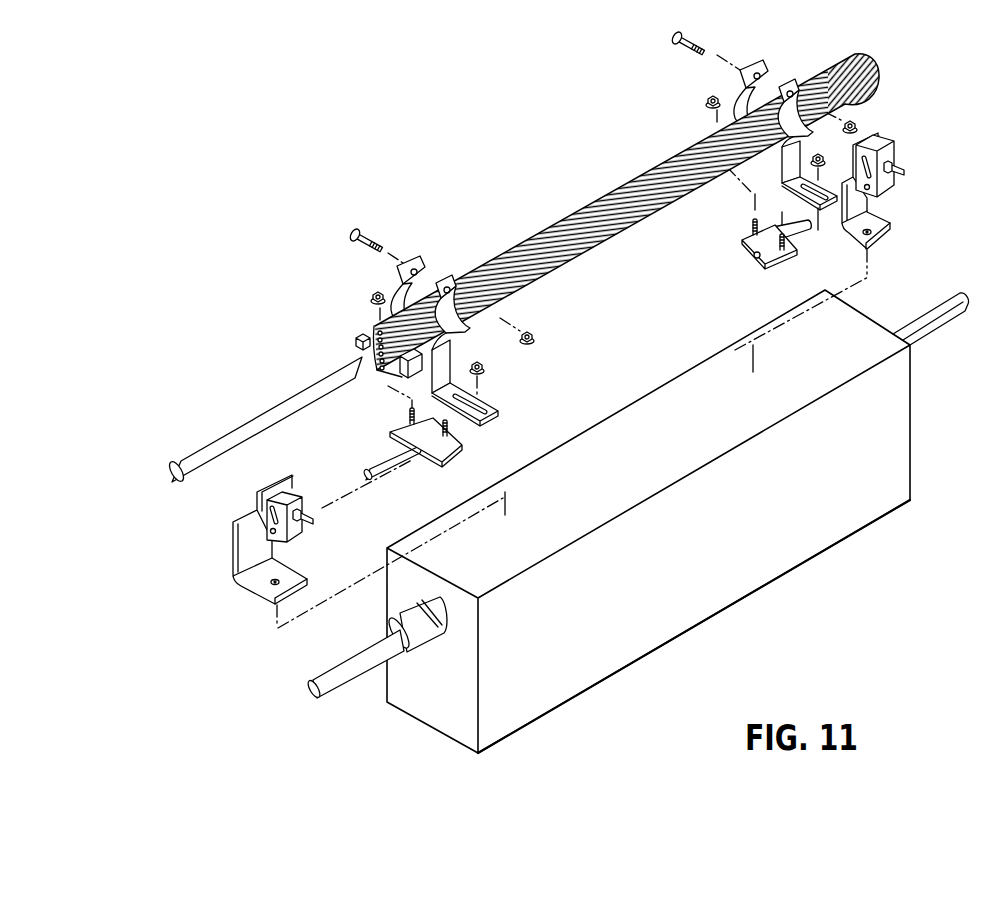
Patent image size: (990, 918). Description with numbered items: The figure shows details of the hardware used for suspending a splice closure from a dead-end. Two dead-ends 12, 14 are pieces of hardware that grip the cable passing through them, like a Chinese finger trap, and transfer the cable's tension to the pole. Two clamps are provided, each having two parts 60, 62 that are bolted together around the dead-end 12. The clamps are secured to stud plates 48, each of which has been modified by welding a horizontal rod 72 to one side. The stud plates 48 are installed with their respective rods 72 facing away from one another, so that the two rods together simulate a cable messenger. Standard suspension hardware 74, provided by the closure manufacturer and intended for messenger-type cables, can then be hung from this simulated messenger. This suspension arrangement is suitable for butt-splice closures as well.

The dead-end 12 is at (595, 212).
The dead-end 14 is at (238, 548).
The stud plate 48 is at (750, 238).
The clamp half 60 is at (500, 318).
The clamp half 62 is at (410, 258).
The horizontal rod 72 is at (383, 477).
The suspension hardware 74 is at (886, 218).